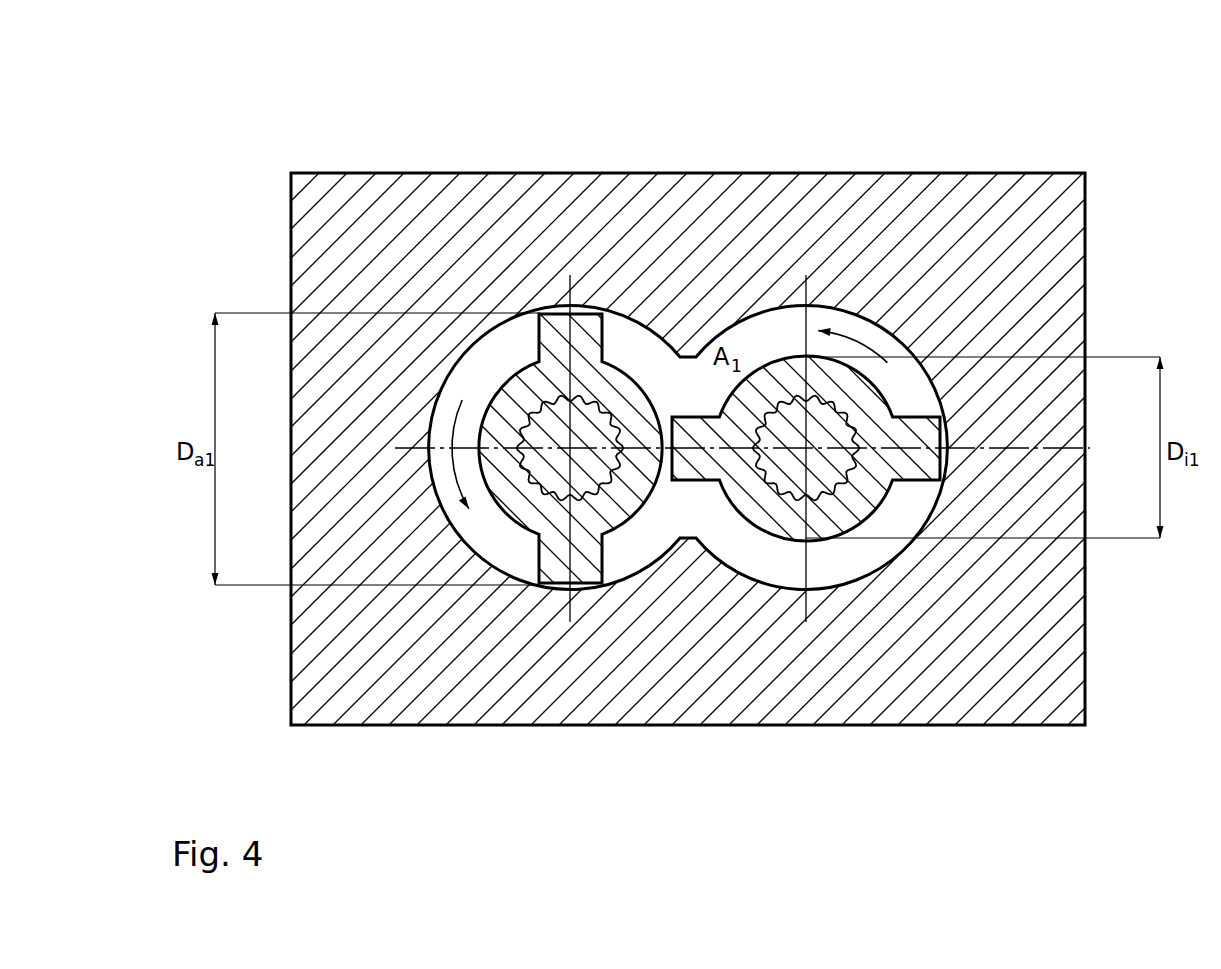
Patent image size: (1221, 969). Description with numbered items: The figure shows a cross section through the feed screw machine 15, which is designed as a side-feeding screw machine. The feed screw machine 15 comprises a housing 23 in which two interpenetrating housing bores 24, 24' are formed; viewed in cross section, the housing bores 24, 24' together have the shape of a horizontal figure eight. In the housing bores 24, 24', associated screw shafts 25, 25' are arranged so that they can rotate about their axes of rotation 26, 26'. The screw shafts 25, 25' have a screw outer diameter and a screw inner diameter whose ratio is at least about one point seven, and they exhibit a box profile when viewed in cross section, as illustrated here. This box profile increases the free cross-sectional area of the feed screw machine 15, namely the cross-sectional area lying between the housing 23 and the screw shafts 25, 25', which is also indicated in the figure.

The feed screw machine 15 is at (652, 136).
The housing 23 is at (432, 190).
The housing bore 24 is at (690, 339).
The housing bore 24' is at (690, 339).
The screw shaft 25 is at (550, 613).
The screw shaft 25' is at (821, 577).
The axis of rotation 26 is at (570, 611).
The axis of rotation 26' is at (839, 611).